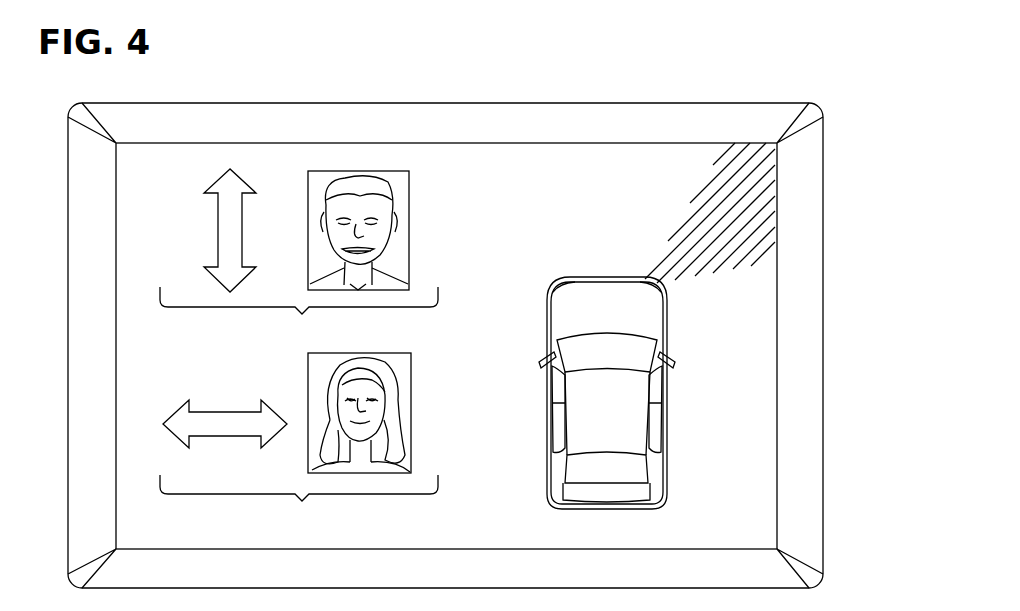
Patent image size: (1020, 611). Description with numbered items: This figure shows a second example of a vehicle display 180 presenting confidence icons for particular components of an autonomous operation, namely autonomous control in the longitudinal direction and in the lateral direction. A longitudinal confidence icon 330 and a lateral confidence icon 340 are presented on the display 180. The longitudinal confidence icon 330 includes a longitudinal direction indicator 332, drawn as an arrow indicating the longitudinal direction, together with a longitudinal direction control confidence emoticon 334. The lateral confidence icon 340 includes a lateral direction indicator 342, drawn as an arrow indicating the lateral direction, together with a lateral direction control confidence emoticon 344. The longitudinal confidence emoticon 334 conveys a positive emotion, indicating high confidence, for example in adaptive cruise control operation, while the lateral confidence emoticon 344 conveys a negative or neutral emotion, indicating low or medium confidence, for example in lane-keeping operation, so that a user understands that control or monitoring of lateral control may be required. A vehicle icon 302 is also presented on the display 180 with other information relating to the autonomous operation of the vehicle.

The display 180 is at (678, 81).
The vehicle icon 302 is at (676, 312).
The longitudinal confidence icon 330 is at (320, 254).
The longitudinal direction indicator 332 is at (228, 241).
The longitudinal direction control confidence emoticon 334 is at (446, 218).
The lateral confidence icon 340 is at (328, 440).
The lateral direction indicator 342 is at (228, 420).
The lateral direction control confidence emoticon 344 is at (446, 391).